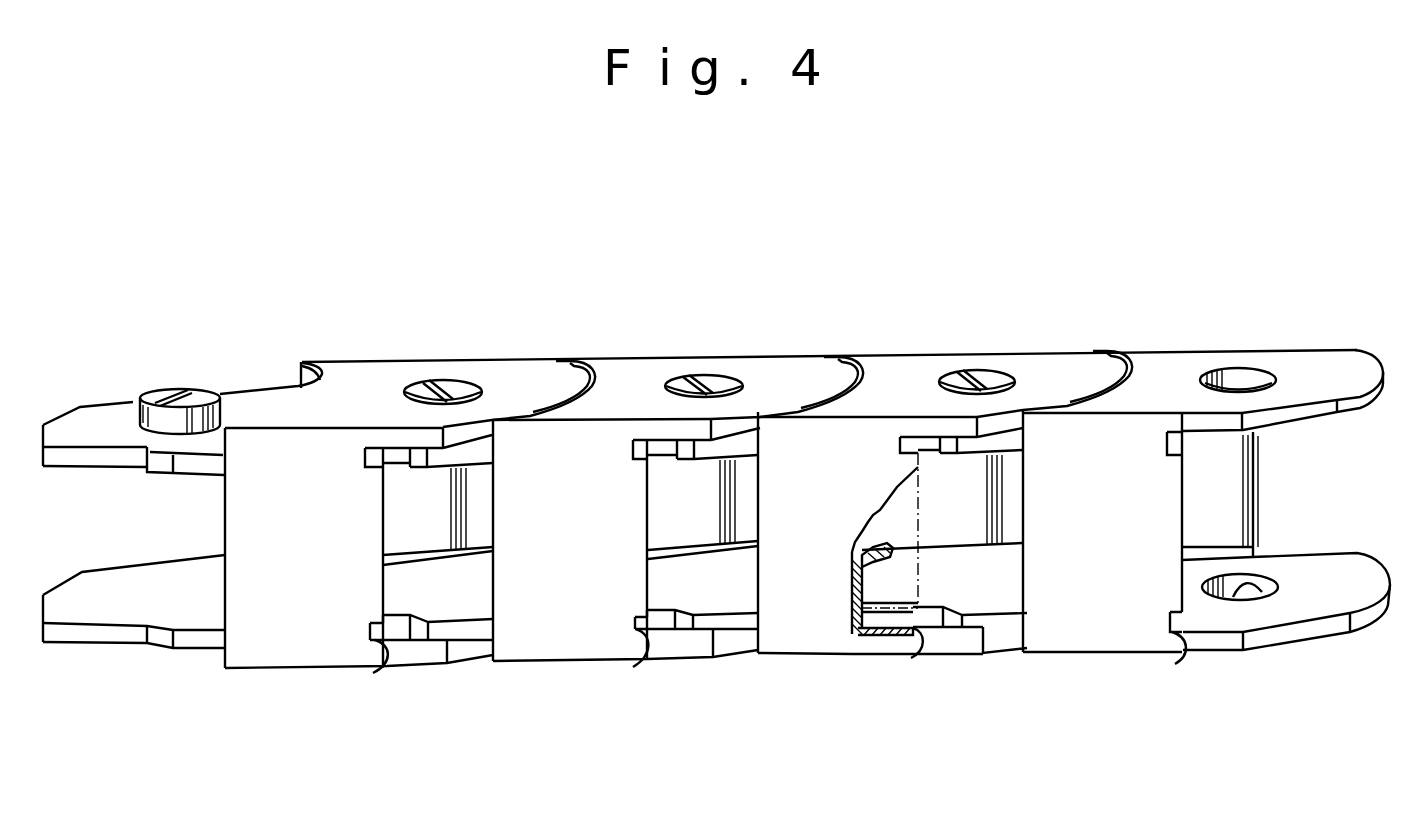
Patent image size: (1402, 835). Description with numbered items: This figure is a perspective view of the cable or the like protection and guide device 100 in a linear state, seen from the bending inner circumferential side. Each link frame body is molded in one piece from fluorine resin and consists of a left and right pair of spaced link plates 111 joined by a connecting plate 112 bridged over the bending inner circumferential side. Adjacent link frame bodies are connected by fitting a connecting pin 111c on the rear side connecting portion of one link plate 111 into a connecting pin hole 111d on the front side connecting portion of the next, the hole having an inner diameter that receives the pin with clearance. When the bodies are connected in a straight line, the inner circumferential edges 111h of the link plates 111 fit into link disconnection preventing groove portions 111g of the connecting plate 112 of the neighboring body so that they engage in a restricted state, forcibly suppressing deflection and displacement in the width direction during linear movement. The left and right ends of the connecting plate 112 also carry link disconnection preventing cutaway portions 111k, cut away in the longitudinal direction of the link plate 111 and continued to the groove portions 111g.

The cable or the like protection and guide device 100 is at (783, 312).
The link plate 111 is at (338, 757).
The connecting pin 111c is at (197, 400).
The connecting pin hole 111d is at (1258, 377).
The link disconnection preventing groove portion 111g is at (868, 633).
The inner circumferential edge 111h is at (107, 457).
The link disconnection preventing cutaway portion 111k is at (390, 453).
The connecting plate 112 is at (1119, 548).